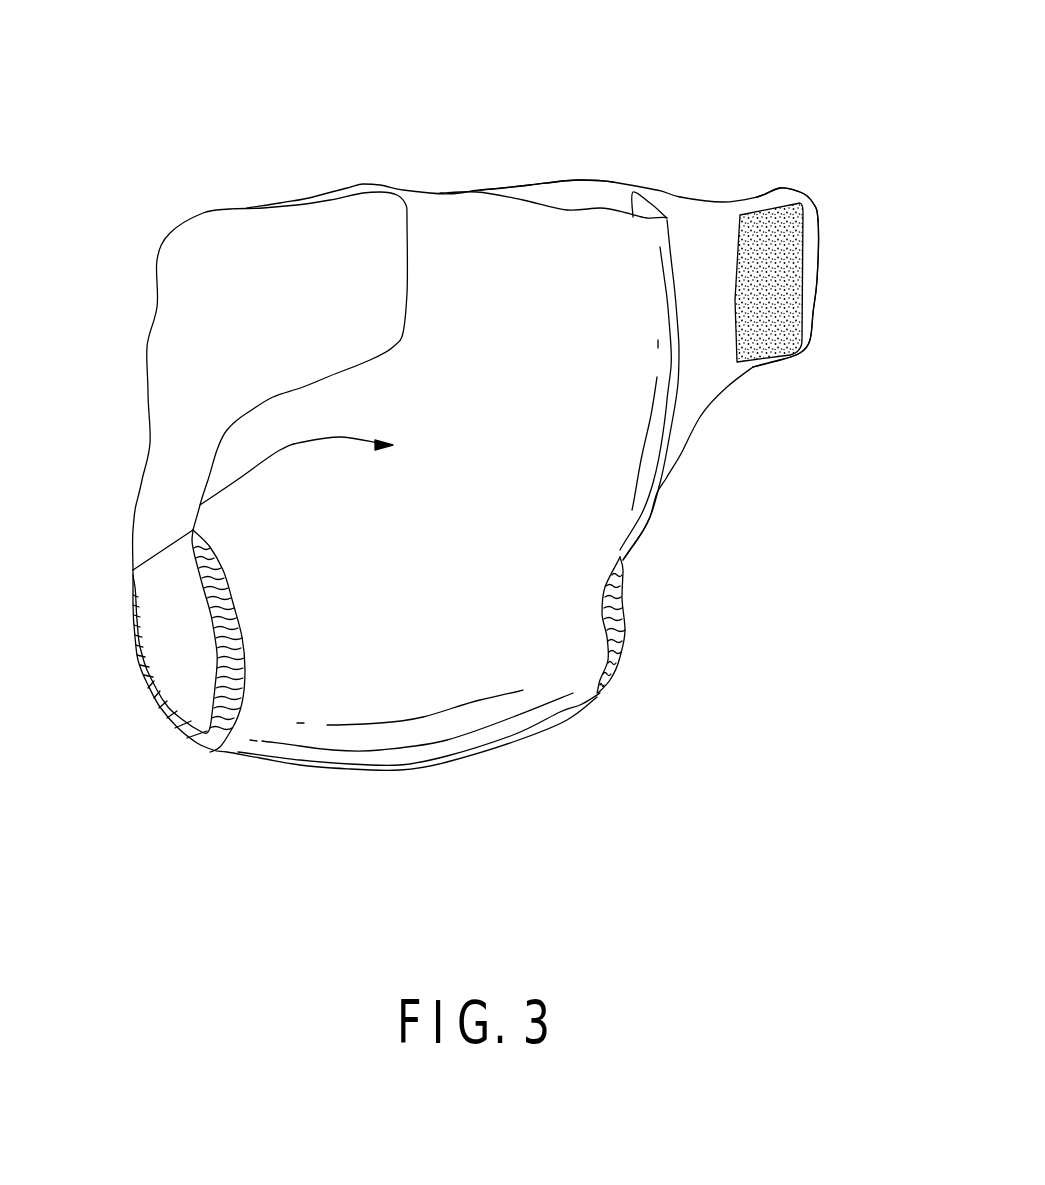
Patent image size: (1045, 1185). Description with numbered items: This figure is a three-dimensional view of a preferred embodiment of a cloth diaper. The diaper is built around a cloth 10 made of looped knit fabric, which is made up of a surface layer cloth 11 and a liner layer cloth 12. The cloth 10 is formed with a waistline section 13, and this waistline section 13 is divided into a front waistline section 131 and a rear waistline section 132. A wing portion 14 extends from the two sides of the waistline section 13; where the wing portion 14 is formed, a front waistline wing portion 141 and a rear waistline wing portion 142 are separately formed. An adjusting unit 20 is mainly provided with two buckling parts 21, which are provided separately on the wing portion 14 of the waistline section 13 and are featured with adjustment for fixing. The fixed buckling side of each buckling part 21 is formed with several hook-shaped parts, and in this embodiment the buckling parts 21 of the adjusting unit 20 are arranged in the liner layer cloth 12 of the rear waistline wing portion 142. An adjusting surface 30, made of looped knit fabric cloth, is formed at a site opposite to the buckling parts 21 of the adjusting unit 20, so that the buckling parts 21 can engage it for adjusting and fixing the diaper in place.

The cloth 10 is at (280, 766).
The surface layer cloth 11 is at (545, 700).
The liner layer cloth 12 is at (698, 357).
The waistline section 13 is at (587, 48).
The front waistline section 131 is at (490, 217).
The rear waistline section 132 is at (595, 193).
The wing portion 14 is at (795, 43).
The front waistline wing portion 141 is at (652, 217).
The rear waistline wing portion 142 is at (770, 200).
The adjusting unit 20 is at (802, 318).
The buckling part 21 is at (777, 257).
The adjusting surface 30 is at (197, 512).